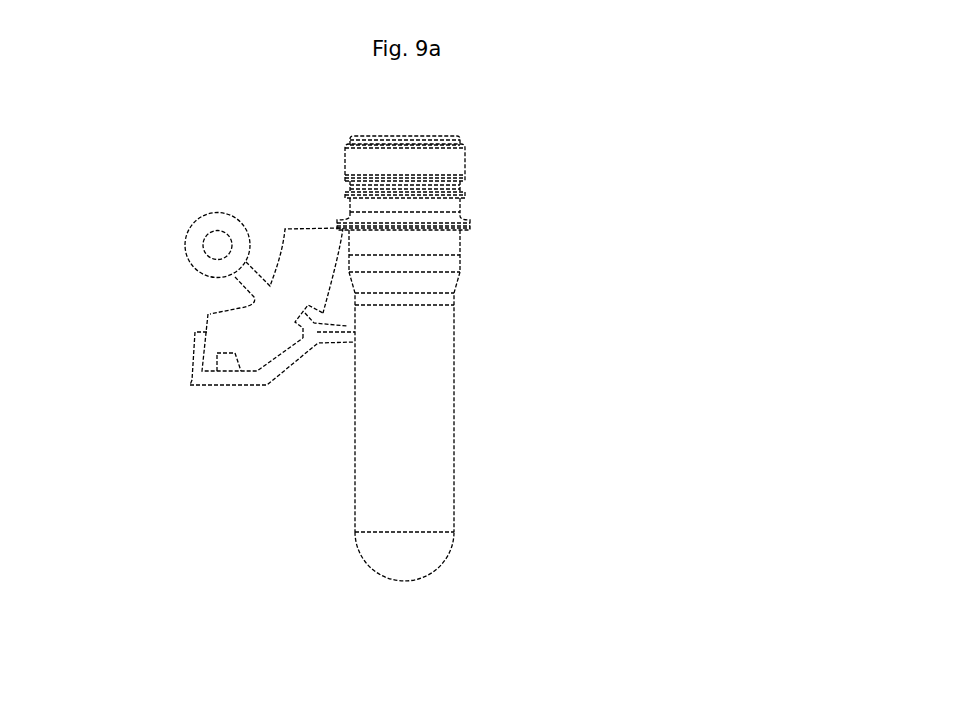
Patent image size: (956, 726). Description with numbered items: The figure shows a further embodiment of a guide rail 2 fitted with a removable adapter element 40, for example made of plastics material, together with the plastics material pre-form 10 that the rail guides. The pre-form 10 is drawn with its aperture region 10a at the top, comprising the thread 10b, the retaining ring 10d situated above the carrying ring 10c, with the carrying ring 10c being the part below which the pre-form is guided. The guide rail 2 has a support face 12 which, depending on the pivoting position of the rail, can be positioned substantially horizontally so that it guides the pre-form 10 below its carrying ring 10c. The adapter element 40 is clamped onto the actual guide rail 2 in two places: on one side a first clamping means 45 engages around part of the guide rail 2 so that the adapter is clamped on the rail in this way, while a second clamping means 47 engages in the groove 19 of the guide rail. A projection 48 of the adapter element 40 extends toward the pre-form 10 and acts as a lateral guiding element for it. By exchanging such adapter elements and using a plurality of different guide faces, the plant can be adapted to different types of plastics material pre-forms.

The guide rail 2 is at (175, 253).
The plastics material pre-form 10 is at (525, 358).
The aperture region 10a is at (515, 173).
The thread 10b is at (353, 167).
The carrying ring 10c is at (462, 227).
The retaining ring 10d is at (347, 198).
The support face 12 is at (325, 228).
The groove 19 is at (306, 314).
The adapter element 40 is at (225, 408).
The first clamping means 45 is at (190, 380).
The second clamping means 47 is at (302, 338).
The projection 48 is at (346, 337).